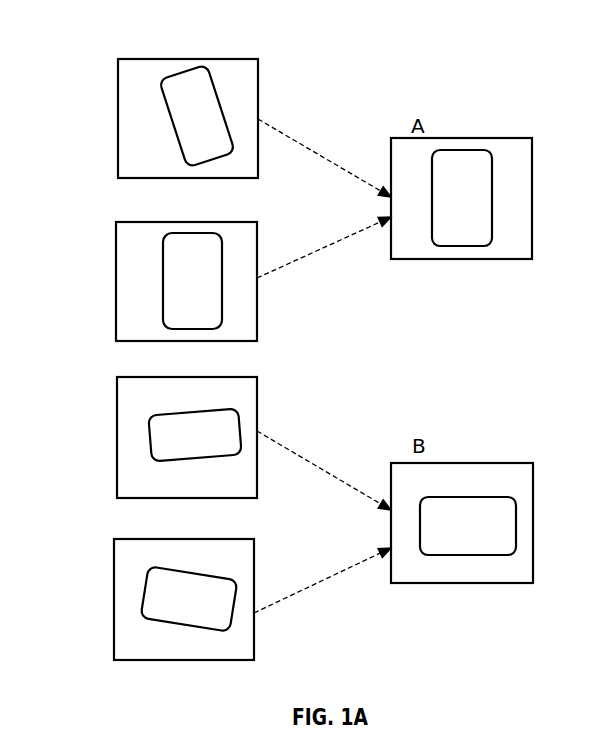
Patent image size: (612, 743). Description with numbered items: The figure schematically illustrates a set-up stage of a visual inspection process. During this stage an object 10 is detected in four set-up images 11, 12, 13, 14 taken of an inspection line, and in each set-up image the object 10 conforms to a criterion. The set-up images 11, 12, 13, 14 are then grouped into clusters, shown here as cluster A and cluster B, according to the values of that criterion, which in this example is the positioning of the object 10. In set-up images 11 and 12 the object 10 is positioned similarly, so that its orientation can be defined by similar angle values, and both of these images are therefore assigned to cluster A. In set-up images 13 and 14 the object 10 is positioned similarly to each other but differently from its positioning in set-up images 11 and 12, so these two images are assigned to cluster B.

The object 10 is at (165, 100).
The set-up image 11 is at (118, 153).
The set-up image 12 is at (116, 317).
The set-up image 13 is at (117, 472).
The set-up image 14 is at (114, 634).